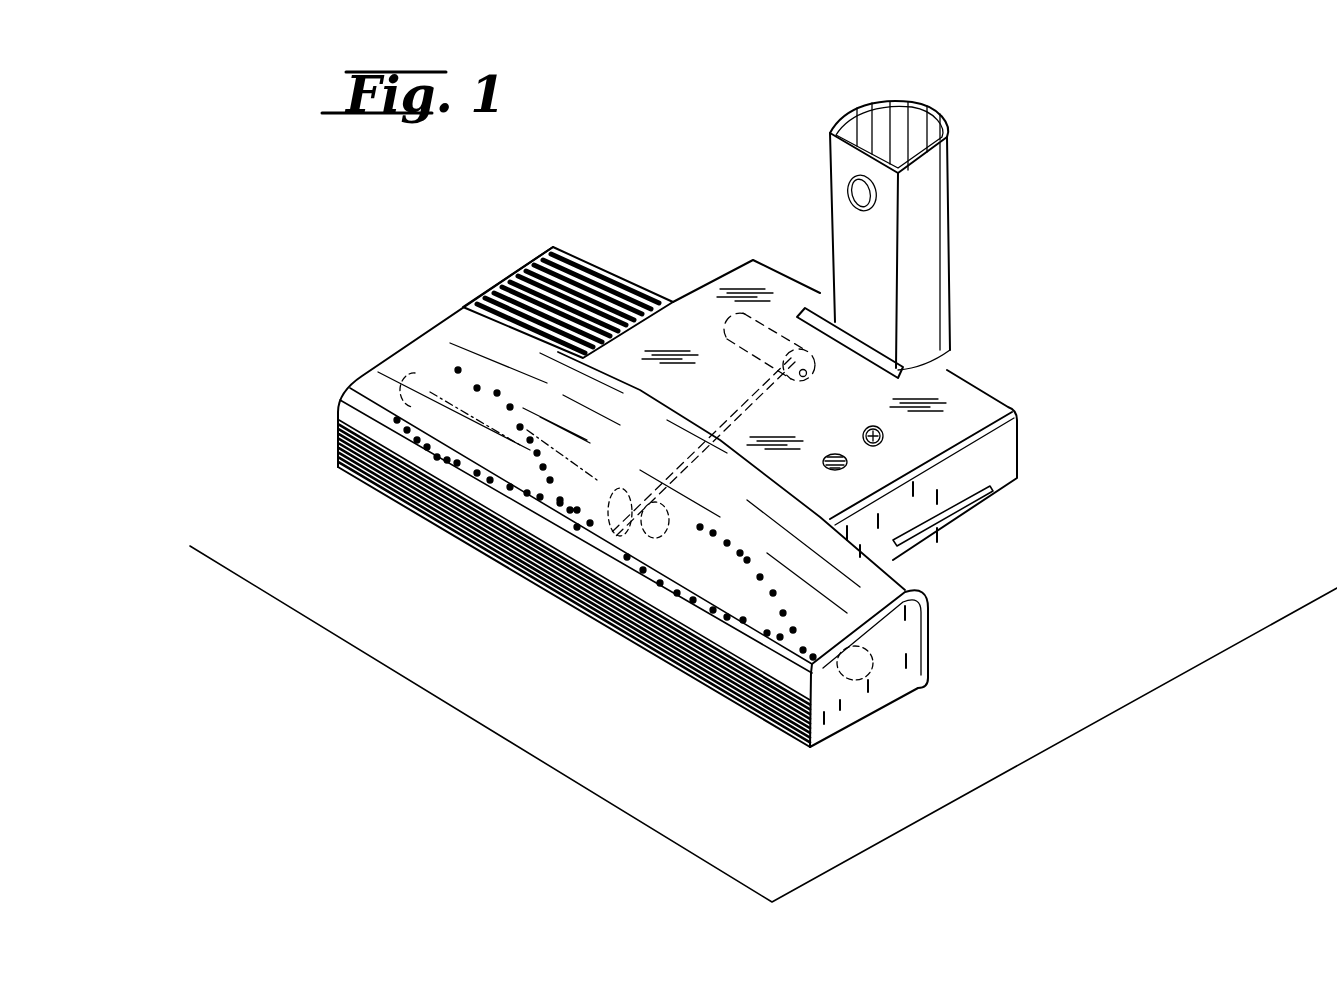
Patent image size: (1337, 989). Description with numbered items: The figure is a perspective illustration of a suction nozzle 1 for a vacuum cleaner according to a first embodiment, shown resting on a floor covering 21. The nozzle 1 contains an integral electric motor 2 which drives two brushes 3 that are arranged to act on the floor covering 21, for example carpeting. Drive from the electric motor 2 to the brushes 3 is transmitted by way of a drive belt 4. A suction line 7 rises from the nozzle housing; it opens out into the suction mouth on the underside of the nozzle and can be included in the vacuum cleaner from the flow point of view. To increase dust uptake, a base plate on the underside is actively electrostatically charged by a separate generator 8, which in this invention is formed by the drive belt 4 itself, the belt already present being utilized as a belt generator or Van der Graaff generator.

The suction nozzle 1 is at (683, 393).
The electric motor 2 is at (720, 328).
The brushes 3 is at (470, 471).
The drive belt 4 is at (733, 420).
The suction line 7 is at (910, 130).
The generator 8 is at (655, 455).
The floor covering 21 is at (967, 738).